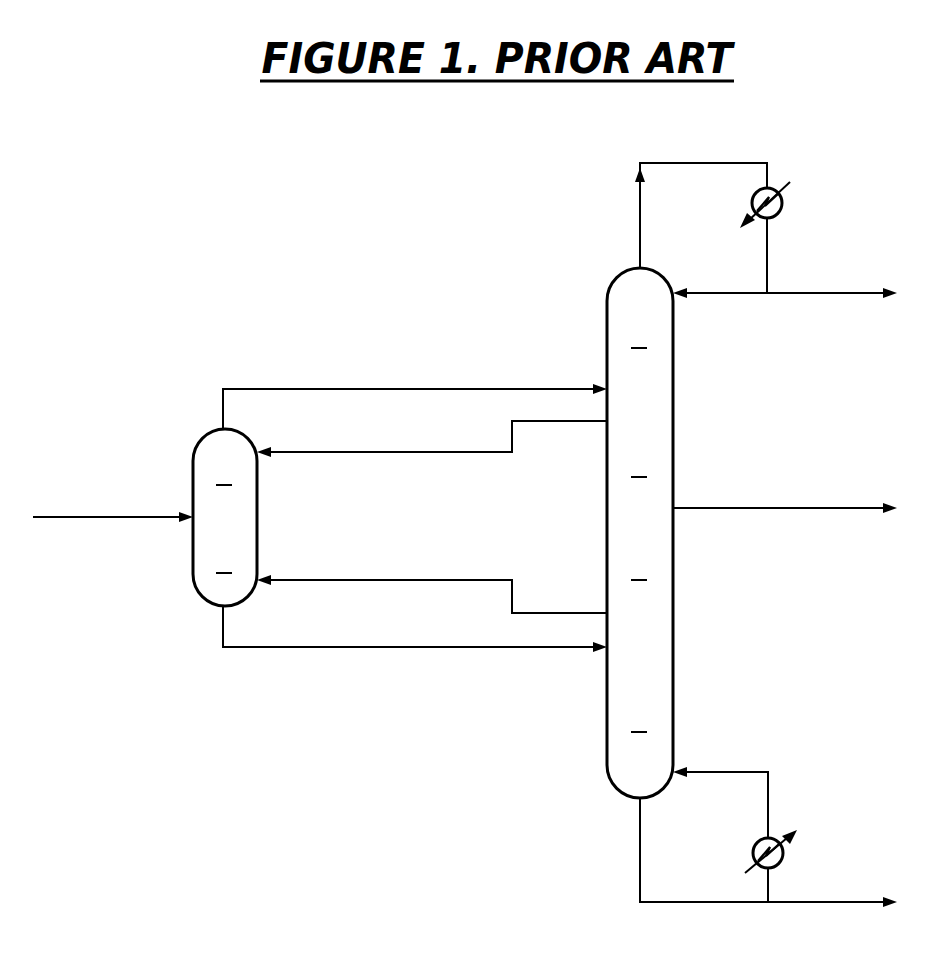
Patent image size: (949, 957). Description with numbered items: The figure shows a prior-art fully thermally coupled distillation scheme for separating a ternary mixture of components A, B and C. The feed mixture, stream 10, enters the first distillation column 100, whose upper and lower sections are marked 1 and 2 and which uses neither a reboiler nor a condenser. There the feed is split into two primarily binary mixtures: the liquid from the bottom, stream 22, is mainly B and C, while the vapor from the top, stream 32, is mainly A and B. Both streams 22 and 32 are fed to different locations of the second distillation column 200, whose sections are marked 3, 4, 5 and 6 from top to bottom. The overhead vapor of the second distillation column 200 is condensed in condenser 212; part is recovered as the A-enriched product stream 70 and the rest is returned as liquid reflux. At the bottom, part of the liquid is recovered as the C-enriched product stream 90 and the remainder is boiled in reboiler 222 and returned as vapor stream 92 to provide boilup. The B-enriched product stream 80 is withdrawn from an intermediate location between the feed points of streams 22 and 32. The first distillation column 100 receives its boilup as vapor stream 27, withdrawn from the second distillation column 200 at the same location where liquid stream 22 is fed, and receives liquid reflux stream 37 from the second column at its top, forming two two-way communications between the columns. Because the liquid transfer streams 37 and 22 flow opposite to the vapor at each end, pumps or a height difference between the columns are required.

The upper section of prefractionator 1 is at (224, 472).
The lower section of prefractionator 2 is at (224, 560).
The top section of main column 3 is at (639, 335).
The upper middle section of main column 4 is at (639, 464).
The lower middle section of main column 5 is at (639, 567).
The bottom section of main column 6 is at (639, 719).
The feed mixture stream 10 is at (80, 519).
The liquid stream 22 is at (462, 648).
The vapor stream 27 is at (462, 579).
The vapor stream 32 is at (462, 388).
The liquid reflux stream 37 is at (462, 454).
The A-enriched product stream 70 is at (823, 293).
The B-enriched product stream 80 is at (778, 508).
The C-enriched product stream 90 is at (823, 903).
The vapor stream 92 is at (728, 772).
The first distillation column 100 is at (257, 542).
The second distillation column 200 is at (673, 643).
The condenser 212 is at (784, 193).
The reboiler 222 is at (784, 851).